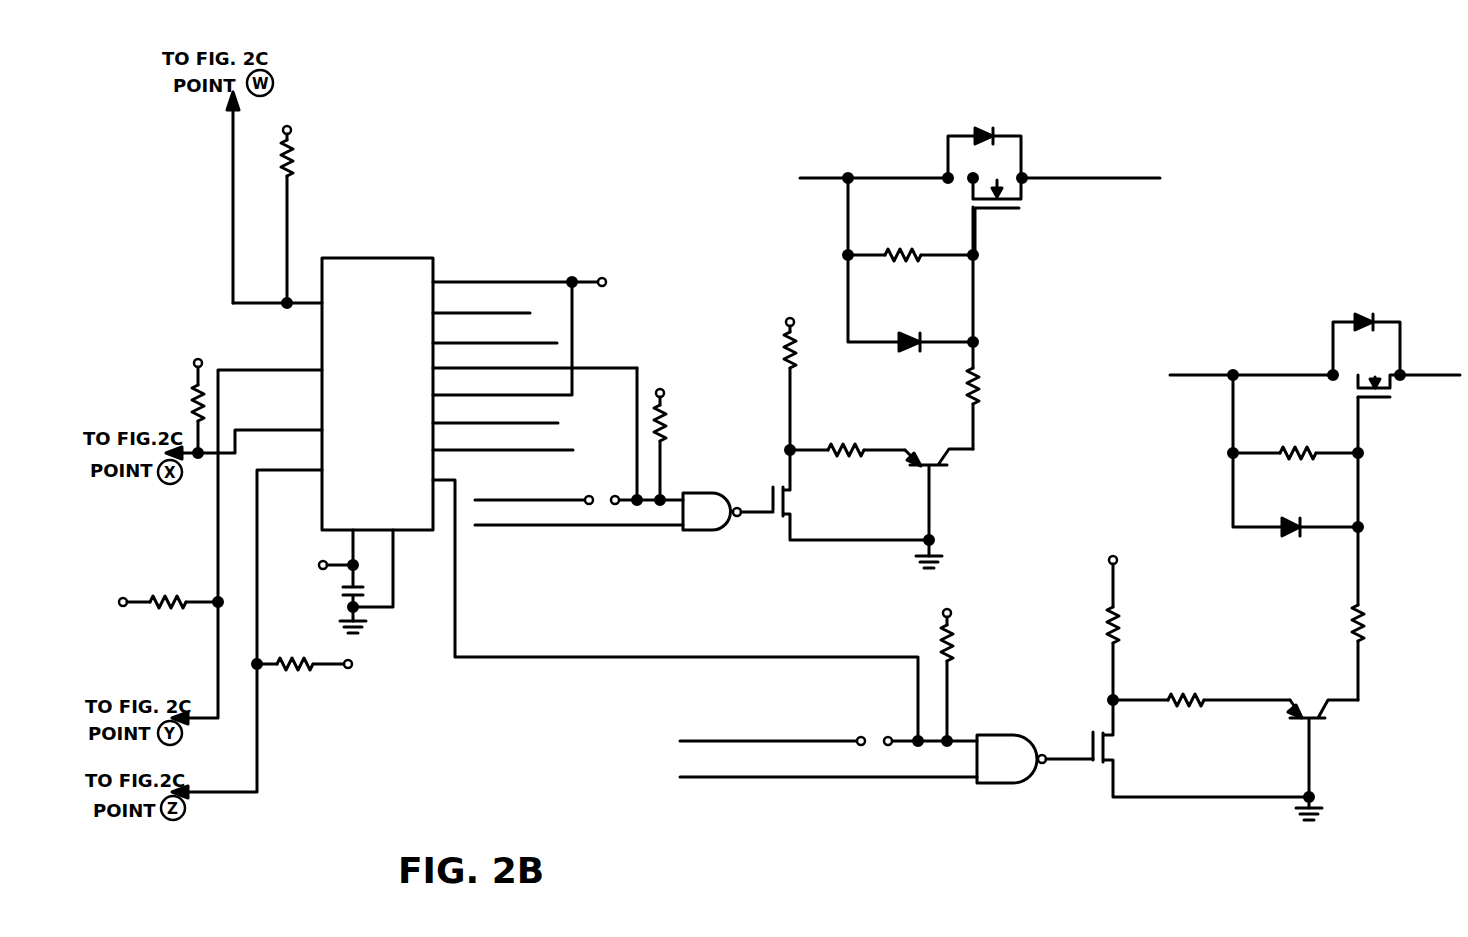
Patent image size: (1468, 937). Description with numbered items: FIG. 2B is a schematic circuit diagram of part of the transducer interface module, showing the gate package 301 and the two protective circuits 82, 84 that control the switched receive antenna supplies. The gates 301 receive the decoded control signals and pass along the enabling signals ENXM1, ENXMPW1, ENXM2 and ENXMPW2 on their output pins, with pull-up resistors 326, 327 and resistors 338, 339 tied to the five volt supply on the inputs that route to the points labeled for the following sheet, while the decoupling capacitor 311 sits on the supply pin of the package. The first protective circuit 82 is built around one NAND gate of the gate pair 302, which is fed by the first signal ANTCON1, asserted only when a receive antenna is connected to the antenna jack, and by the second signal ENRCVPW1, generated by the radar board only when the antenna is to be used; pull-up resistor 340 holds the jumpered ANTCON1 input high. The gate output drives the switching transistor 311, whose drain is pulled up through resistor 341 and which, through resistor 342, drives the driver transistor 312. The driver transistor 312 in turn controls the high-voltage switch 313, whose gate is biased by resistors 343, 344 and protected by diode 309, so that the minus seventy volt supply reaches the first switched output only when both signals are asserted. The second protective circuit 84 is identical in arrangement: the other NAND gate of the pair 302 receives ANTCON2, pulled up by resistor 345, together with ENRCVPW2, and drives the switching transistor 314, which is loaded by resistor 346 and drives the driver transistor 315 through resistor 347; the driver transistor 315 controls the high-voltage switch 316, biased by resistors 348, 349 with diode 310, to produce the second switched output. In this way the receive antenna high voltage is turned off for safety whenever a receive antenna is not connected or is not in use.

The protective circuit 82 is at (1025, 83).
The protective circuit 84 is at (710, 849).
The gates U301 301 is at (608, 476).
The U302A/U302B NAND gates 302 is at (784, 639).
The resistor R326 5.1K 326 is at (310, 204).
The resistor R327 5.1K 327 is at (174, 394).
The resistor R338 10K 338 is at (146, 601).
The resistor R339 10K 339 is at (328, 663).
The capacitor C311 / transistor Q311 311 is at (599, 541).
The resistor R340 100K 340 is at (680, 434).
The resistor R341 1K 341 is at (763, 376).
The resistor R342 10K 342 is at (847, 447).
The resistor R343 300K 343 is at (911, 274).
The resistor R344 300K 344 is at (1007, 395).
The resistor R345 100K 345 is at (966, 666).
The resistor R346 1K 346 is at (1136, 618).
The resistor R347 10K 347 is at (1201, 700).
The resistor R348 300K 348 is at (1296, 462).
The resistor R349 300K 349 is at (1391, 613).
The diode D309 309 is at (911, 263).
The diode D310 310 is at (1298, 455).
The transistor Q312 312 is at (939, 486).
The MOSFET Q313 313 is at (976, 170).
The MOSFET Q314 314 is at (1201, 748).
The transistor Q315 315 is at (1321, 734).
The MOSFET Q316 316 is at (1315, 327).